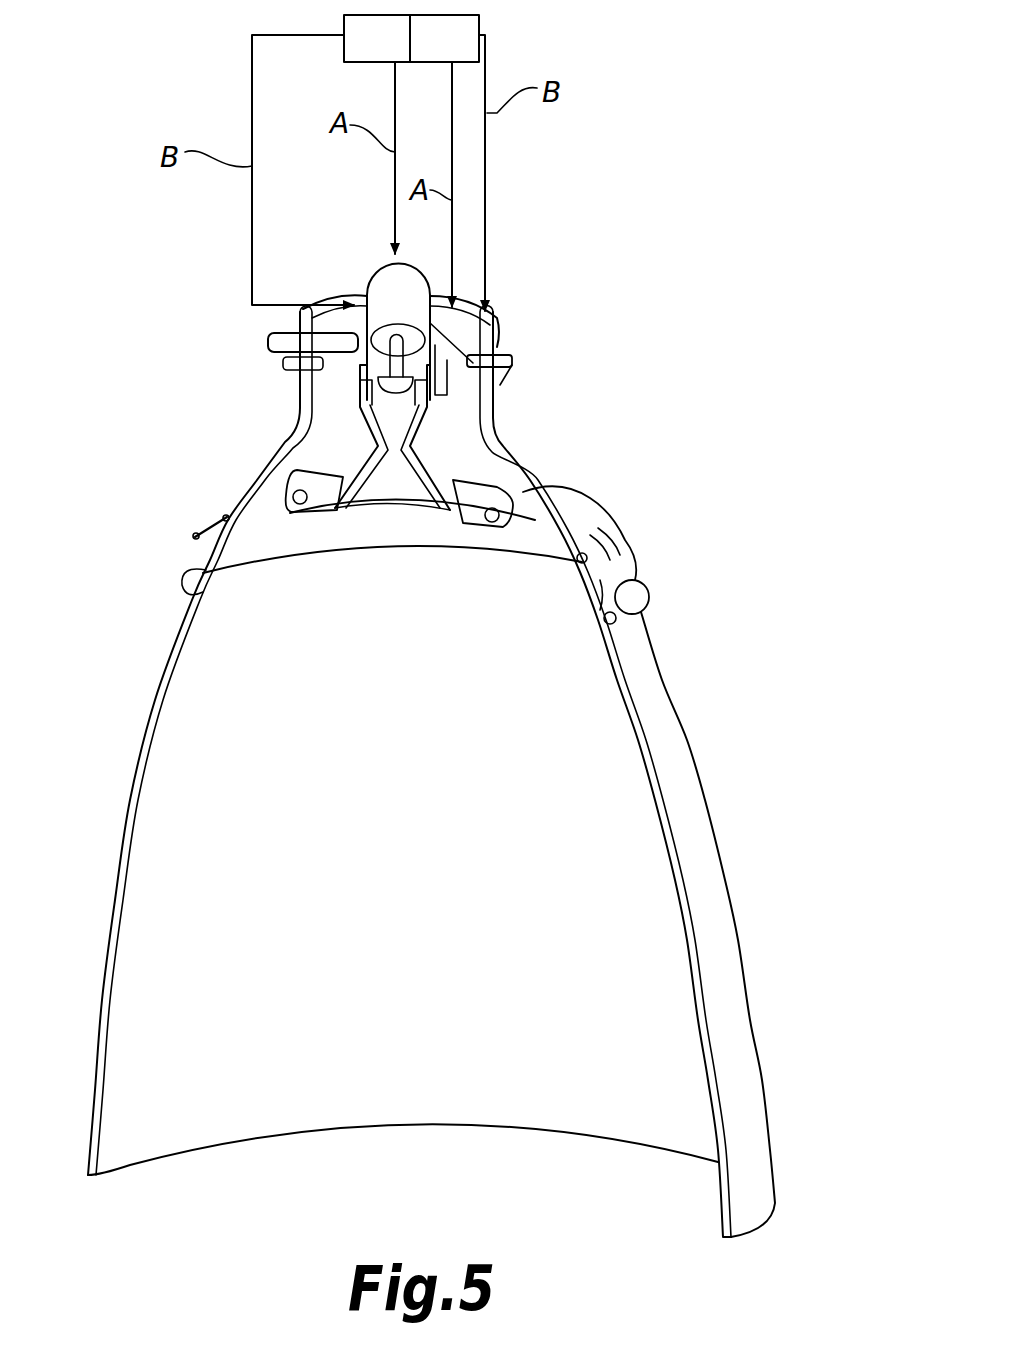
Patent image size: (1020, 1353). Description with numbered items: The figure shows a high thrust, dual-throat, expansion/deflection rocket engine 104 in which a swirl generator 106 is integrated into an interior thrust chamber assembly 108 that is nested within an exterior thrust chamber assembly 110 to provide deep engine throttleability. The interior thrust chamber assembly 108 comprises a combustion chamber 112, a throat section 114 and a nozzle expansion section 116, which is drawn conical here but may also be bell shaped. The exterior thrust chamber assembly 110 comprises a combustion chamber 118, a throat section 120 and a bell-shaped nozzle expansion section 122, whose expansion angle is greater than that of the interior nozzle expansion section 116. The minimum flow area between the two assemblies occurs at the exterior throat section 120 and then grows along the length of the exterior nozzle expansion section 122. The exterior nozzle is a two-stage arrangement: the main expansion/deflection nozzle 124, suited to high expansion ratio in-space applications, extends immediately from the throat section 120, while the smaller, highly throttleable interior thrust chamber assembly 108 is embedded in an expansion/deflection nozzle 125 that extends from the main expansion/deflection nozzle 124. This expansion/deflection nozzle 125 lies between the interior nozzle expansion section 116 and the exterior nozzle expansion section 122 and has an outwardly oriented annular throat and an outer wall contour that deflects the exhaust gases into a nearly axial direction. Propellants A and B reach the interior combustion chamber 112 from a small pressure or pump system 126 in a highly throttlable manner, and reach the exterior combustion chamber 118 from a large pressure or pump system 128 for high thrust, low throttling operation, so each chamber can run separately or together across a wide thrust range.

The high thrust, dual-throat, expansion/deflection rocket engine 104 is at (683, 314).
The swirl generator 106 is at (393, 337).
The interior thrust chamber assembly 108 is at (351, 423).
The exterior thrust chamber assembly 110 is at (621, 520).
The combustion chamber 112 is at (360, 385).
The throat section 114 is at (423, 450).
The nozzle expansion section 116 is at (208, 530).
The combustion chamber 118 is at (524, 383).
The throat section 120 is at (510, 438).
The nozzle expansion section 122 is at (510, 327).
The main expansion/deflection nozzle 124 is at (226, 500).
The expansion/deflection nozzle 125 is at (547, 517).
The small pressure or pump system 126 is at (398, 52).
The large pressure or pump system 128 is at (469, 52).